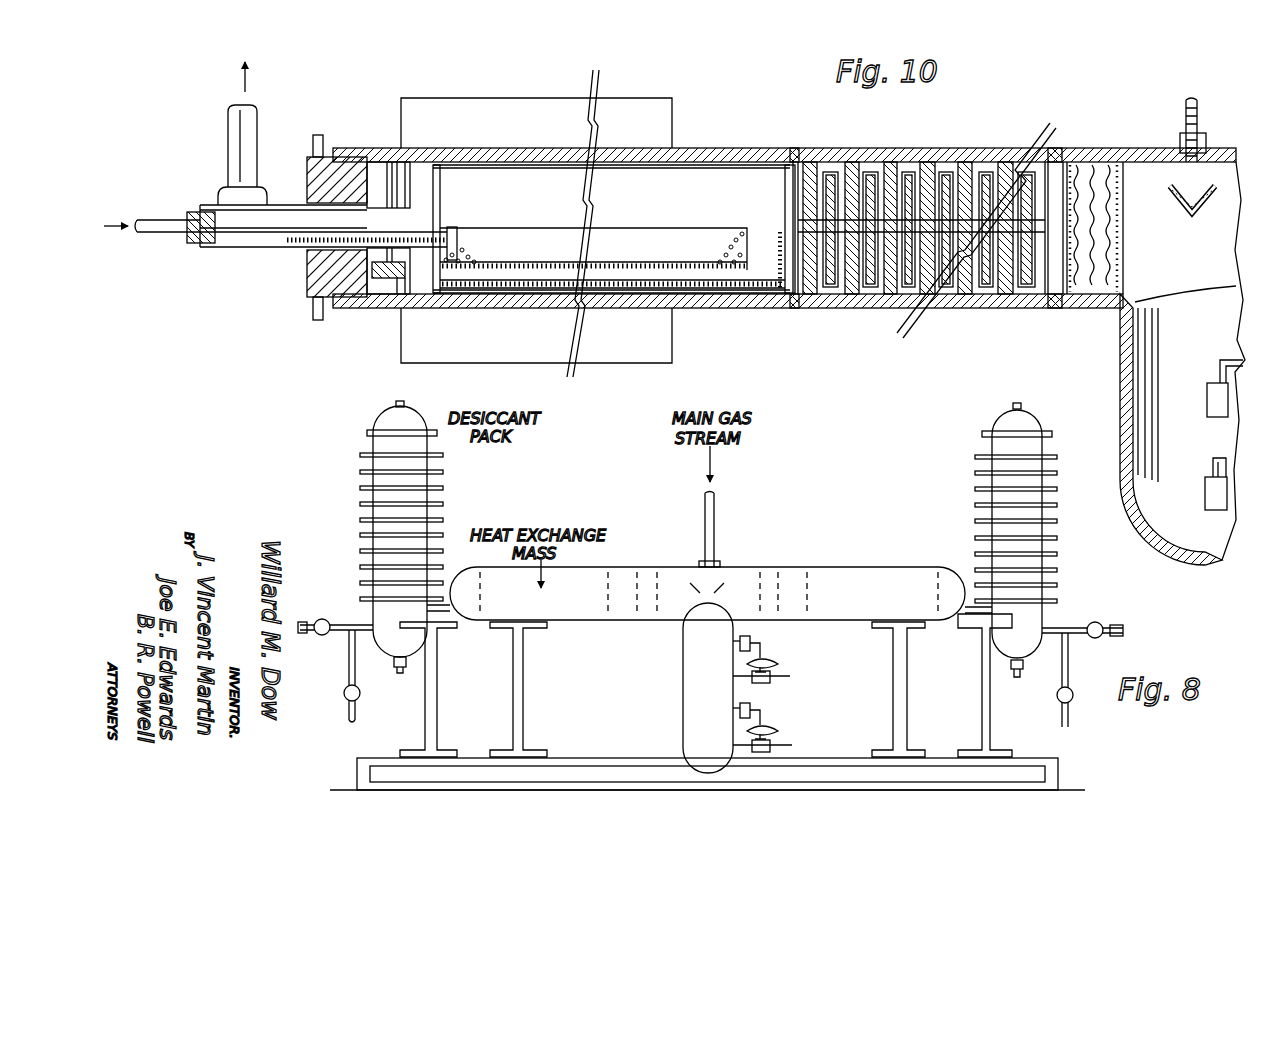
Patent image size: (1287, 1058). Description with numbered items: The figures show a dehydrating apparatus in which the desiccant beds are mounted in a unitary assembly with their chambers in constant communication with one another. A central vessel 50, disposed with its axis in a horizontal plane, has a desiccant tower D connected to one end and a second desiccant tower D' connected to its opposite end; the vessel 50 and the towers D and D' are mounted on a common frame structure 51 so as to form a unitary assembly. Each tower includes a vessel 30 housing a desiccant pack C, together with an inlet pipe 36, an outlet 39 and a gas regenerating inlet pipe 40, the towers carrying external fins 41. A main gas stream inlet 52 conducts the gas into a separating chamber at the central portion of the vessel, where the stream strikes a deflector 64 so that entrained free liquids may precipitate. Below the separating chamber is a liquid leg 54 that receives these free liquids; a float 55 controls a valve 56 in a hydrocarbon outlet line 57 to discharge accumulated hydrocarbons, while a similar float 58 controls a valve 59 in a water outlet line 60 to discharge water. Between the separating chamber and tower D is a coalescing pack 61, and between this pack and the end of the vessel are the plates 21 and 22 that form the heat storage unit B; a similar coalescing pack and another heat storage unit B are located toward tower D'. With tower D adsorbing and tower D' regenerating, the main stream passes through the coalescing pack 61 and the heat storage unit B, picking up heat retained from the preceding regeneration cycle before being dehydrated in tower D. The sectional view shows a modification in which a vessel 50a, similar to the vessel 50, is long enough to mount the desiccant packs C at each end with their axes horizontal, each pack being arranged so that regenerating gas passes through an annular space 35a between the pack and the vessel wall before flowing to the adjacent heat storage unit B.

In FIG. 10, the plate 21 is at (891, 168).
In FIG. 10, the plate 22 is at (948, 175).
In FIG. 8, the vessel 30 is at (367, 502).
In FIG. 10, the annular space 35a is at (508, 162).
In FIG. 8, the inlet pipe 36 is at (443, 615).
In FIG. 8, the outlet 39 is at (355, 625).
In FIG. 8, the gas regenerating inlet pipe 40 is at (1018, 674).
In FIG. 8, the cooling fins 41 is at (360, 582).
In FIG. 8, the central vessel 50 is at (828, 565).
In FIG. 10, the vessel 50a is at (733, 160).
In FIG. 8, the common frame structure 51 is at (605, 757).
In FIG. 10, the main gas stream inlet 52 is at (1200, 120).
In FIG. 8, the liquid leg 54 is at (683, 662).
In FIG. 10, the float 55 is at (1207, 395).
In FIG. 8, the valve 56 is at (778, 674).
In FIG. 8, the hydrocarbon outlet line 57 is at (790, 680).
In FIG. 10, the float 58 is at (1205, 492).
In FIG. 8, the valve 59 is at (778, 740).
In FIG. 8, the water outlet line 60 is at (795, 748).
In FIG. 10, the coalescing pack 61 is at (1100, 165).
In FIG. 10, the deflector 64 is at (1216, 194).
In FIG. 10, the heat storage unit B is at (868, 318).
In FIG. 10, the desiccant pack C is at (547, 236).
In FIG. 10, the desiccant tower D is at (715, 329).
In FIG. 8, the desiccant tower D is at (471, 488).
In FIG. 8, the second desiccant tower D' is at (979, 530).